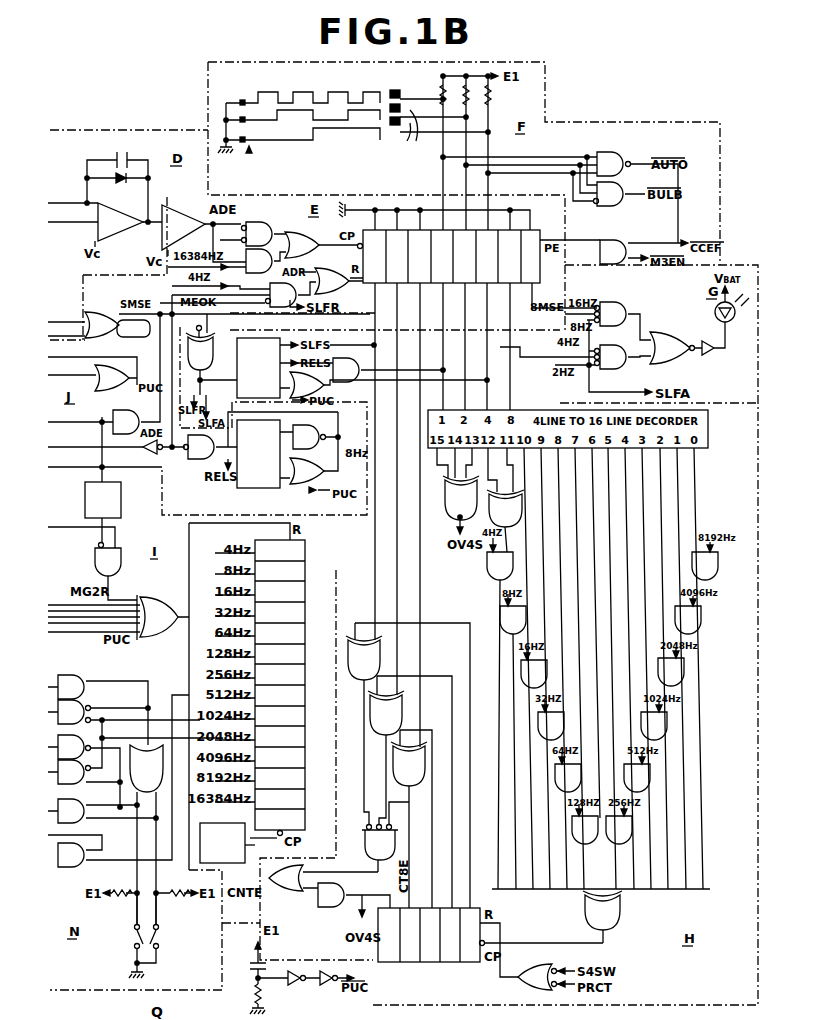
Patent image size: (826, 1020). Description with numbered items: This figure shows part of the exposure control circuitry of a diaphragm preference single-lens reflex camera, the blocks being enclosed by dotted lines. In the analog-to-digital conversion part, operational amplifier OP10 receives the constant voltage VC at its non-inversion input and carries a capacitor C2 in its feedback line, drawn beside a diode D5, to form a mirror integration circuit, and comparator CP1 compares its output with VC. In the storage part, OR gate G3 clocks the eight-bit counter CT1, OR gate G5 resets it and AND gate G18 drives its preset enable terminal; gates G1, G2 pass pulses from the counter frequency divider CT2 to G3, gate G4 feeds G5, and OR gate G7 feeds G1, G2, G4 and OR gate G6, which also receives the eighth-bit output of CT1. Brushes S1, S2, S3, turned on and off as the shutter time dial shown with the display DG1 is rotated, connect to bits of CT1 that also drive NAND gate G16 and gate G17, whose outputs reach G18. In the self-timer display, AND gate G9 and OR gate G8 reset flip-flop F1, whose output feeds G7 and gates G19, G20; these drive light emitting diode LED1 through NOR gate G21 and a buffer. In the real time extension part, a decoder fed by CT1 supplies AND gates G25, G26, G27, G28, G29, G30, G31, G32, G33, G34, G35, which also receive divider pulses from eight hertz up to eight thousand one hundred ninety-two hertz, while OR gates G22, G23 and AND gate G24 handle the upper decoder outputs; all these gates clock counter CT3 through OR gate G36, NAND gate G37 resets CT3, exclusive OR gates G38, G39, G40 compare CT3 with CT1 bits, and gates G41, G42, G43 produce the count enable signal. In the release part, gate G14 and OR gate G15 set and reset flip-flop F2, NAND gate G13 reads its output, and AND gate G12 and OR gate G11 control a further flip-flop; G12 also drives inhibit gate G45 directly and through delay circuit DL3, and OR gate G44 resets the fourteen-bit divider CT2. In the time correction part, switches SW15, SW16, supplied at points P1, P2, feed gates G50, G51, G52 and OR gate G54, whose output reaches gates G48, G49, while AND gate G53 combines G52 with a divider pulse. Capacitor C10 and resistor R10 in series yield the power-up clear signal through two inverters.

The display unit DG1 is at (304, 128).
The brush S1 is at (405, 95).
The brush S2 is at (412, 130).
The brush S3 is at (403, 136).
The gate G1 is at (257, 234).
The gate G2 is at (259, 261).
The OR gate G3 is at (302, 245).
The gate G4 is at (281, 295).
The OR gate G5 is at (332, 281).
The OR gate G6 is at (117, 325).
The OR gate G7 is at (200, 348).
The OR gate G8 is at (307, 385).
The AND gate G9 is at (346, 370).
The OR gate G11 is at (112, 378).
The AND gate G12 is at (126, 422).
The NAND gate G13 is at (199, 447).
The inhibit AND gate G14 is at (309, 437).
The OR gate G15 is at (307, 471).
The NAND gate G16 is at (614, 164).
The gate G17 is at (609, 194).
The AND gate G18 is at (613, 252).
The gate G19 is at (611, 314).
The gate G20 is at (611, 357).
The NOR gate G21 is at (672, 348).
The OR gate G22 is at (461, 498).
The OR gate G23 is at (505, 508).
The AND gate G24 is at (500, 566).
The AND gate G25 is at (513, 620).
The AND gate G26 is at (534, 674).
The AND gate G27 is at (551, 726).
The AND gate G28 is at (568, 778).
The AND gate G29 is at (585, 830).
The AND gate G30 is at (619, 830).
The AND gate G31 is at (637, 778).
The AND gate G32 is at (654, 726).
The AND gate G33 is at (671, 672).
The AND gate G34 is at (688, 620).
The AND gate G35 is at (705, 566).
The OR gate G36 is at (602, 910).
The NAND gate G37 is at (537, 977).
The exclusive OR gate G38 is at (364, 658).
The exclusive OR gate G39 is at (386, 713).
The exclusive OR gate G40 is at (409, 764).
The gate G41 is at (380, 843).
The AND gate G42 is at (331, 895).
The OR gate G43 is at (286, 878).
The OR gate G44 is at (157, 617).
The inhibit AND gate G45 is at (108, 560).
The gate G48 is at (71, 687).
The gate G49 is at (74, 712).
The inhibit AND gate G50 is at (74, 747).
The inhibit AND gate G51 is at (74, 772).
The AND gate G52 is at (71, 811).
The AND gate G53 is at (71, 855).
The OR gate G54 is at (146, 768).
The counter CT1 is at (451, 256).
The counter frequency divider CT2 is at (280, 685).
The counter CT3 is at (429, 935).
The D type flip-flop F1 is at (258, 368).
The flip-flop F2 is at (258, 454).
The delay circuit DL3 is at (103, 500).
The operational amplifier OP10 is at (120, 222).
The comparator CP1 is at (183, 227).
The capacitor C2 is at (121, 152).
The diode D5 is at (117, 185).
The light emitting diode LED1 is at (742, 311).
The shutter time correcting switch SW15 is at (122, 937).
The shutter time correcting switch SW16 is at (173, 937).
The terminal P1 is at (132, 909).
The terminal P2 is at (166, 909).
The capacitor C10 is at (273, 966).
The resistor R10 is at (275, 993).